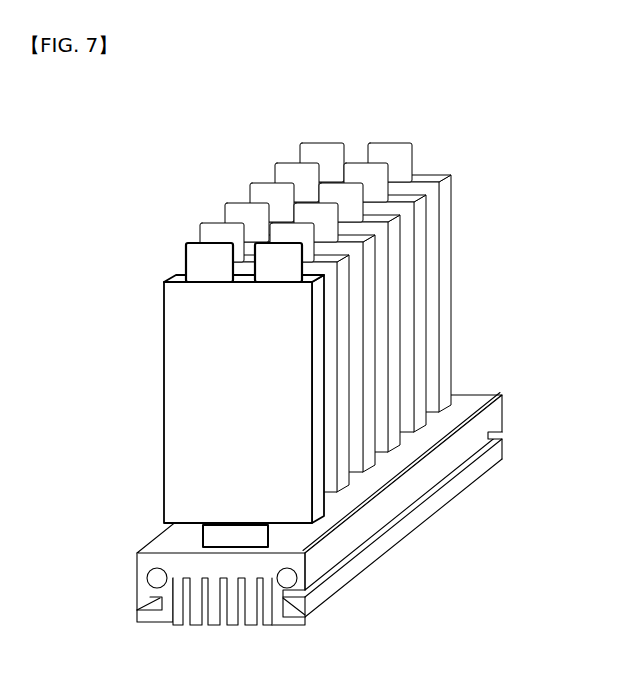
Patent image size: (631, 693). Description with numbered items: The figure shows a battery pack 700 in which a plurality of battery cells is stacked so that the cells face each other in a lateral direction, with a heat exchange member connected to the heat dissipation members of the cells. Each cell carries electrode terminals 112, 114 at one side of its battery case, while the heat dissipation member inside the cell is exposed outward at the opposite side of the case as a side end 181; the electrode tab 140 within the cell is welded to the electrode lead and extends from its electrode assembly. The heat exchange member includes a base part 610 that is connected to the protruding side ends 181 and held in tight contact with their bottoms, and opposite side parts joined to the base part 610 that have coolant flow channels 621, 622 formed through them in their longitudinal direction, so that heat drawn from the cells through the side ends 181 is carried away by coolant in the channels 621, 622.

The battery pack 700 is at (47, 154).
The electrode terminal 112 is at (301, 158).
The electrode terminal 114 is at (413, 152).
The electrode tab 140 is at (205, 386).
The base part 610 is at (316, 521).
The side end of heat dissipation member 181 is at (265, 537).
The coolant flow channel 621 is at (147, 579).
The coolant flow channel 622 is at (293, 589).